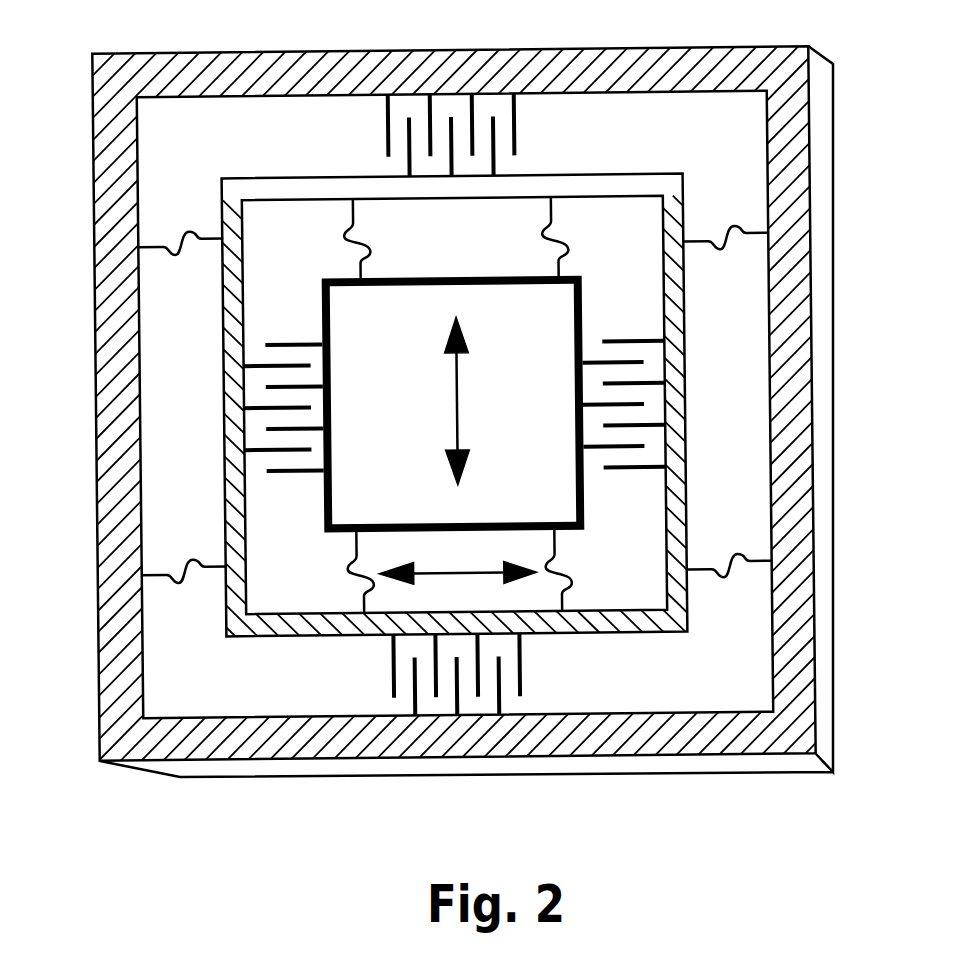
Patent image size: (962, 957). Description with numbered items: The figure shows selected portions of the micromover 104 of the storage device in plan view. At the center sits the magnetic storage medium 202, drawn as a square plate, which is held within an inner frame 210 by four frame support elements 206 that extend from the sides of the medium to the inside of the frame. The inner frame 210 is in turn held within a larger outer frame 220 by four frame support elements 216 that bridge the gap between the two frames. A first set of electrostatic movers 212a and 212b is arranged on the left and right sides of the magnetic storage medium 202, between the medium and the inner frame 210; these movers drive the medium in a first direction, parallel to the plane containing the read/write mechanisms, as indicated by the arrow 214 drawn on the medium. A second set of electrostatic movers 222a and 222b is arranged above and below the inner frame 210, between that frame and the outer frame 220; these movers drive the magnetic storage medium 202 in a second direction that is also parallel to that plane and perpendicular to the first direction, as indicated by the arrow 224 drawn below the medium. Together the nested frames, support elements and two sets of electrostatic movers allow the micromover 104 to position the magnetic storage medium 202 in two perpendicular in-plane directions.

The micromover 104 is at (834, 694).
The frame 220 is at (120, 504).
The frame 210 is at (237, 595).
The magnetic storage medium 202 is at (587, 505).
The frame support elements 216 is at (157, 243).
The inner flexures 206 is at (560, 246).
The electrostatic mover 212a is at (288, 341).
The electrostatic mover 212b is at (632, 338).
The electrostatic mover 222a is at (515, 130).
The electrostatic mover 222b is at (522, 660).
The arrow 214 is at (458, 408).
The arrow 224 is at (438, 575).